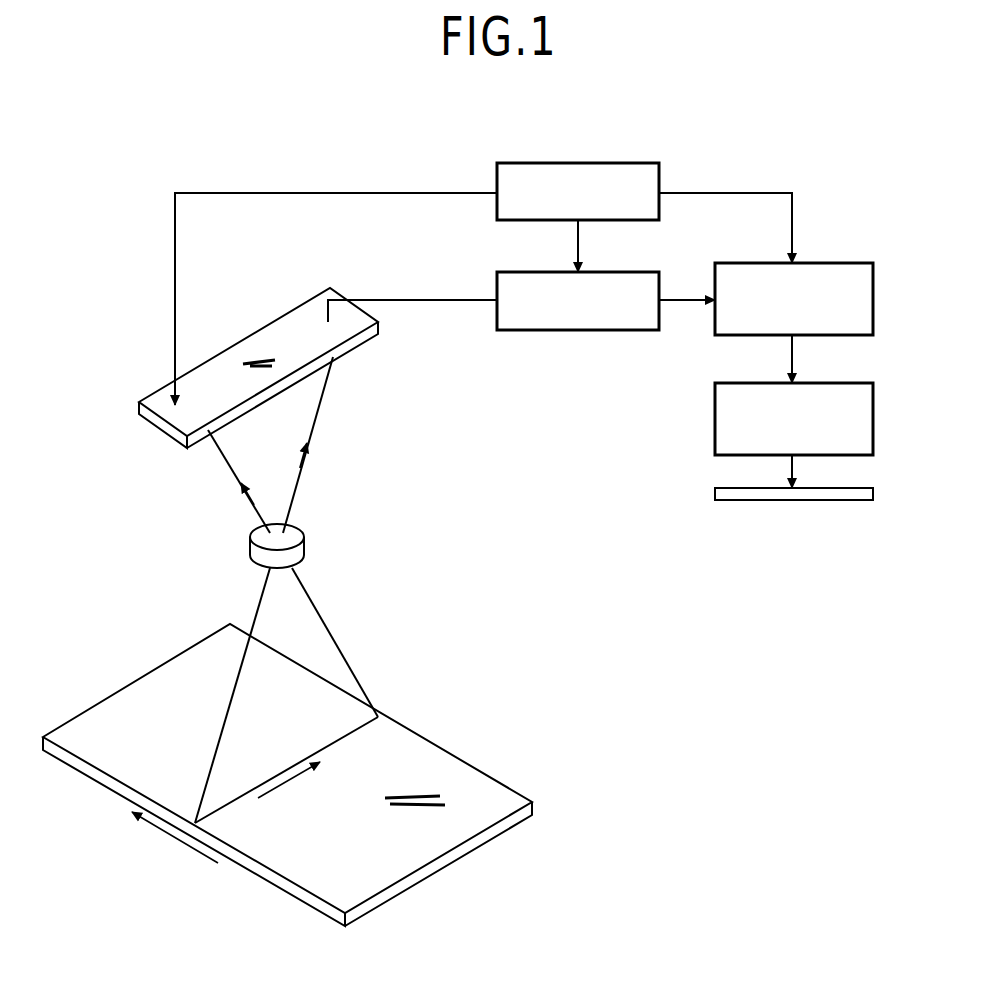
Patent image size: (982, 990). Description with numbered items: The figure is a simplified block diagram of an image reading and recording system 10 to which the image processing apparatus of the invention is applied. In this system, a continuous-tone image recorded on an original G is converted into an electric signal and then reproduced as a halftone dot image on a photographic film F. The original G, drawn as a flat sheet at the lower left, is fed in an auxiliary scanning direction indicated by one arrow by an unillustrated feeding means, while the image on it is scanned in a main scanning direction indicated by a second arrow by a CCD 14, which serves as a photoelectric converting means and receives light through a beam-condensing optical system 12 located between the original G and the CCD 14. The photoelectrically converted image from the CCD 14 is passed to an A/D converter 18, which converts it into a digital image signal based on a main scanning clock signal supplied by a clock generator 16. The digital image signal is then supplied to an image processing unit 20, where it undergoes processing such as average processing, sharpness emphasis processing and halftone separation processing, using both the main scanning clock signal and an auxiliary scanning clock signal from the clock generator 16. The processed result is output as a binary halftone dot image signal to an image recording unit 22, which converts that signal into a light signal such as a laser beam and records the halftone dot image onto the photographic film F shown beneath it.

The image reading and recording system 10 is at (215, 170).
The beam-condensing optical system 12 is at (302, 532).
The CCD 14 is at (348, 343).
The clock generator 16 is at (575, 163).
The A/D converter 18 is at (497, 272).
The image processing unit 20 is at (715, 263).
The image recording unit 22 is at (715, 383).
The photographic film F is at (715, 488).
The original G is at (447, 767).